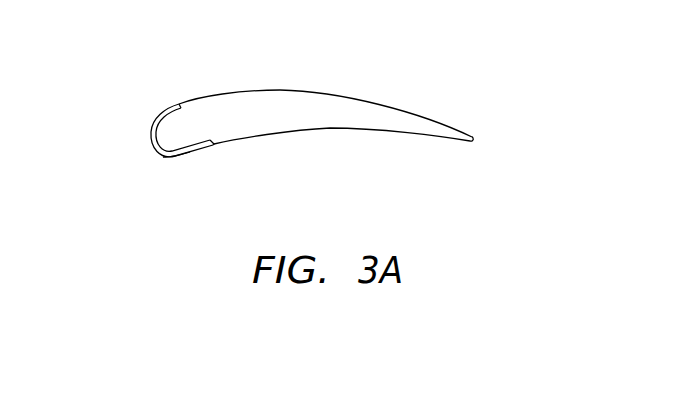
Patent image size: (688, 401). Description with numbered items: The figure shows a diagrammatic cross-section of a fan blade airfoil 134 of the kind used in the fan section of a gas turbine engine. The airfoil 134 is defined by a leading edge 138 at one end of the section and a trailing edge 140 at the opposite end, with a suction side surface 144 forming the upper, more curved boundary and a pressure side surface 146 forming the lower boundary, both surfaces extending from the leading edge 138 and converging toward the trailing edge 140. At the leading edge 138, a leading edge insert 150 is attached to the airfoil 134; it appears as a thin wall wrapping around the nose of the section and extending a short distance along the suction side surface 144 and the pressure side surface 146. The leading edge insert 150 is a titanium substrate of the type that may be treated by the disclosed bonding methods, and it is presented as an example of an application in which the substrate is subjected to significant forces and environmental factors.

The airfoil 134 is at (308, 117).
The leading edge 138 is at (150, 143).
The trailing edge 140 is at (474, 139).
The suction side surface 144 is at (270, 92).
The pressure side surface 146 is at (266, 135).
The leading edge insert 150 is at (162, 156).